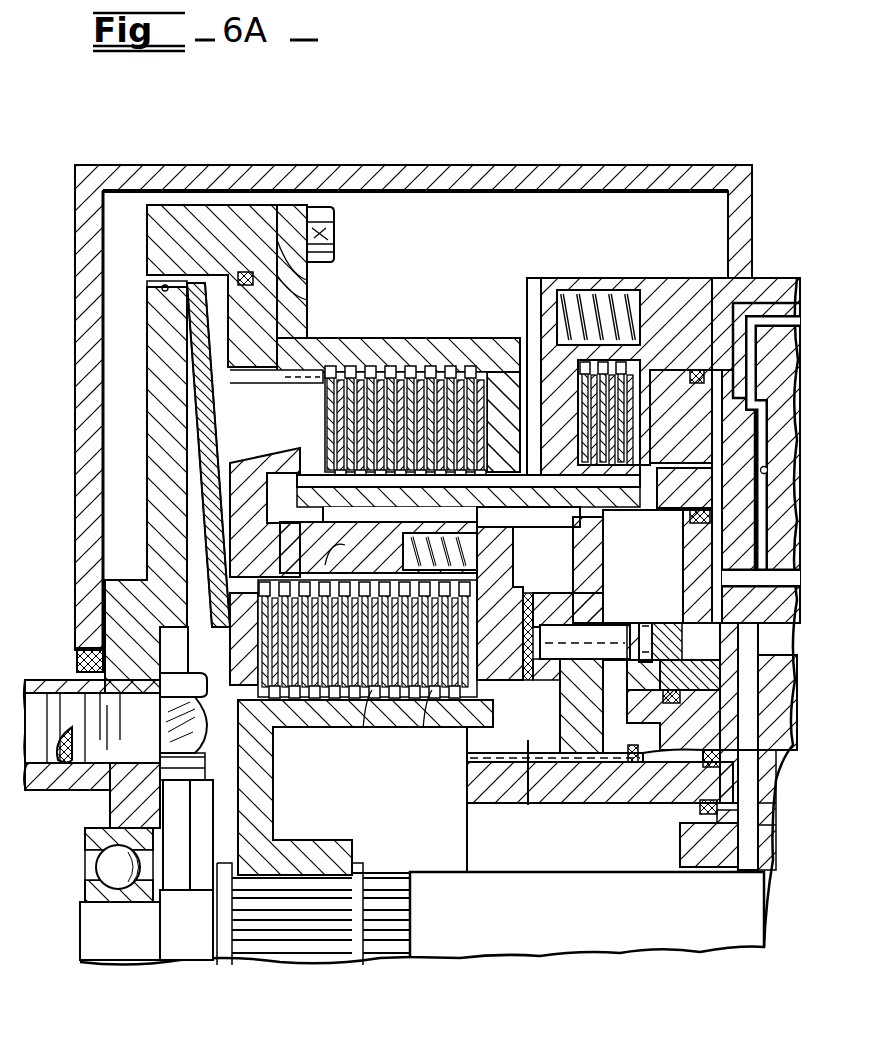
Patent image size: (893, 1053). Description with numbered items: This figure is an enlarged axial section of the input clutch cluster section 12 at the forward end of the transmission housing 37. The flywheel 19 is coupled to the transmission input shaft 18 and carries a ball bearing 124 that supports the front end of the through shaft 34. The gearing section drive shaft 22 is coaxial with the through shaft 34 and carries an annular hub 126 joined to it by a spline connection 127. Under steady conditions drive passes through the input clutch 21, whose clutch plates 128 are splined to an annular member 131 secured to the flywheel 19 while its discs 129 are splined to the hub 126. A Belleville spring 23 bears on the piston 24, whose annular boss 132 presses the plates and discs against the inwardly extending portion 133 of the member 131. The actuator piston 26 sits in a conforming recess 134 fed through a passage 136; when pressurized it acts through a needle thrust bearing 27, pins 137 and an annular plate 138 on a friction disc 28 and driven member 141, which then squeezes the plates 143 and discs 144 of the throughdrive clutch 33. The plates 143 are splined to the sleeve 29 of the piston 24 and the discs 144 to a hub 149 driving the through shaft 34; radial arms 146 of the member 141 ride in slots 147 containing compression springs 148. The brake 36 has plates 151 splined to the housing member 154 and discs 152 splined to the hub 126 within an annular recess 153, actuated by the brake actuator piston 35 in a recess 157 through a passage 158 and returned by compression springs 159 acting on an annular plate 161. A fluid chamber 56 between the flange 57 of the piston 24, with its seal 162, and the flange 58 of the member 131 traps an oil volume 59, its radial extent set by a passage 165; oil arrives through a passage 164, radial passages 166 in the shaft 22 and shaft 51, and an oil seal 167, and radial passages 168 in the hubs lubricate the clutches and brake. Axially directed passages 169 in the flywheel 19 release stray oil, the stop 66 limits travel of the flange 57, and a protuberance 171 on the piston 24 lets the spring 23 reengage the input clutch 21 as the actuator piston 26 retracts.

The input clutch cluster section 12 is at (270, 147).
The transmission housing 37 is at (75, 175).
The brake 36 is at (655, 258).
The stop 66 is at (225, 272).
The axially directed passages 169 is at (160, 280).
The fluid chamber 56 is at (307, 280).
The oil volume 59 is at (307, 300).
The flange of input clutch member 58 is at (302, 322).
The flange of piston 57 is at (222, 327).
The flywheel 19 is at (155, 360).
The spring 23 is at (200, 402).
The annular boss 132 is at (300, 428).
The piston 24 is at (232, 488).
The protuberance 171 is at (228, 532).
The sleeve 29 is at (290, 563).
The throughdrive clutch 33 is at (256, 648).
The seal 162 is at (325, 235).
The input clutch 21 is at (405, 300).
The annular member 131 is at (505, 375).
The inwardly extending portion 133 is at (492, 380).
The clutch plates 128 is at (340, 375).
The discs 129 is at (420, 375).
The passage 165 is at (525, 290).
The compression springs 159 is at (594, 290).
The transmission housing member 154 is at (706, 312).
The plates 151 is at (605, 375).
The discs 152 is at (615, 395).
The brake actuator piston 35 is at (694, 414).
The annular plate 161 is at (645, 432).
The annular recess 153 is at (630, 450).
The passage 158 is at (740, 357).
The recess 157 is at (737, 425).
The passage 136 is at (767, 470).
The conforming recess 134 is at (740, 537).
The actuator piston 26 is at (700, 600).
The radial passages 168 is at (608, 535).
The slots 147 is at (470, 520).
The compression springs 148 is at (480, 545).
The radial arms 146 is at (500, 568).
The annular hub 126 is at (605, 555).
The annular plate 138 is at (575, 585).
The needle thrust bearing 27 is at (640, 623).
The pins 137 is at (612, 654).
The driven member 141 is at (520, 652).
The friction disc 28 is at (540, 698).
The passage 164 is at (762, 690).
The discs 144 is at (363, 728).
The plates 143 is at (423, 728).
The hub 149 is at (273, 785).
The spline connection 127 is at (528, 808).
The gearing section drive shaft 22 is at (558, 806).
The oil seal 167 is at (698, 808).
The shaft 51 is at (678, 843).
The radial passages 166 is at (770, 840).
The through shaft 34 is at (538, 926).
The transmission input shaft 18 is at (45, 790).
The ball bearing 124 is at (100, 868).